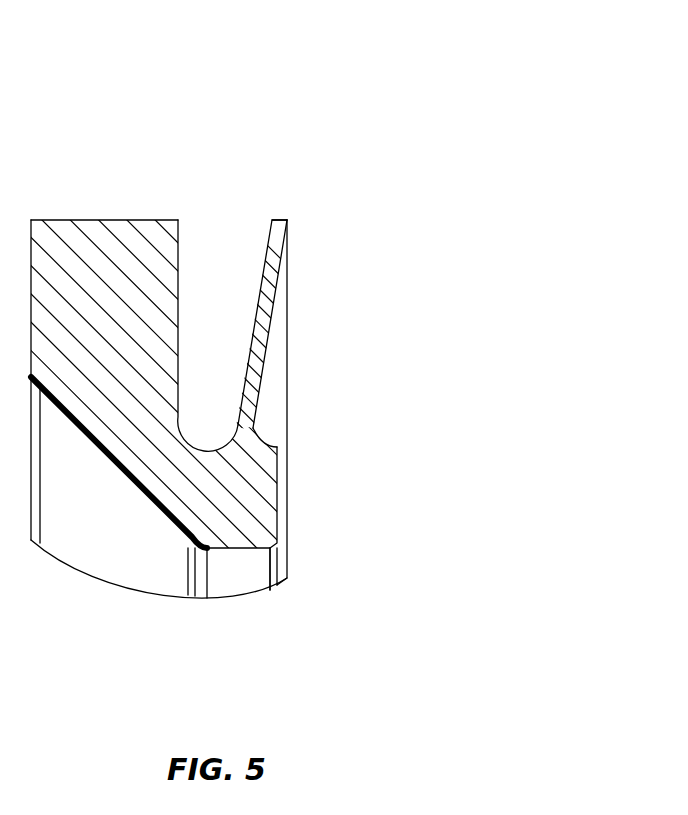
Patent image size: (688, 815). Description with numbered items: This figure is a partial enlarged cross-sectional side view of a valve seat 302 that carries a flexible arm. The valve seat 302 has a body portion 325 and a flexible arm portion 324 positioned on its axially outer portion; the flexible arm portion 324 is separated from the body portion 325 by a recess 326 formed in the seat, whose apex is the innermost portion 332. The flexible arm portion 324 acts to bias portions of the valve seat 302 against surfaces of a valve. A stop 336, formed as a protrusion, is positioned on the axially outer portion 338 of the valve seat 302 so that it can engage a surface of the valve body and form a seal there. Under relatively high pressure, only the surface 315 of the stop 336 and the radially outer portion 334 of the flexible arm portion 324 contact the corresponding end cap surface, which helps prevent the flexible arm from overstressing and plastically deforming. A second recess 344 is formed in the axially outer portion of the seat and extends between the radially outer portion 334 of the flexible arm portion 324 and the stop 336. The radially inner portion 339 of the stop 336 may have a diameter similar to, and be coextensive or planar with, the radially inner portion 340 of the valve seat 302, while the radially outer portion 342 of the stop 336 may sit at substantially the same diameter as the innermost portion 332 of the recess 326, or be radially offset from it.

The valve seat 302 is at (508, 96).
The surface of the stop 315 is at (283, 483).
The flexible arm portion 324 is at (252, 357).
The body portion 325 is at (97, 314).
The recess 326 is at (216, 330).
The innermost portion of the recess 332 is at (203, 450).
The outer portion of the flexible arm portion 334 is at (279, 223).
The stop 336 is at (277, 523).
The axially outer portion 338 is at (272, 465).
The radially inner portion of the stop 339 is at (265, 563).
The radially inner portion of the valve seat 340 is at (220, 575).
The radially outer portion of the stop 342 is at (268, 426).
The second recess 344 is at (278, 376).